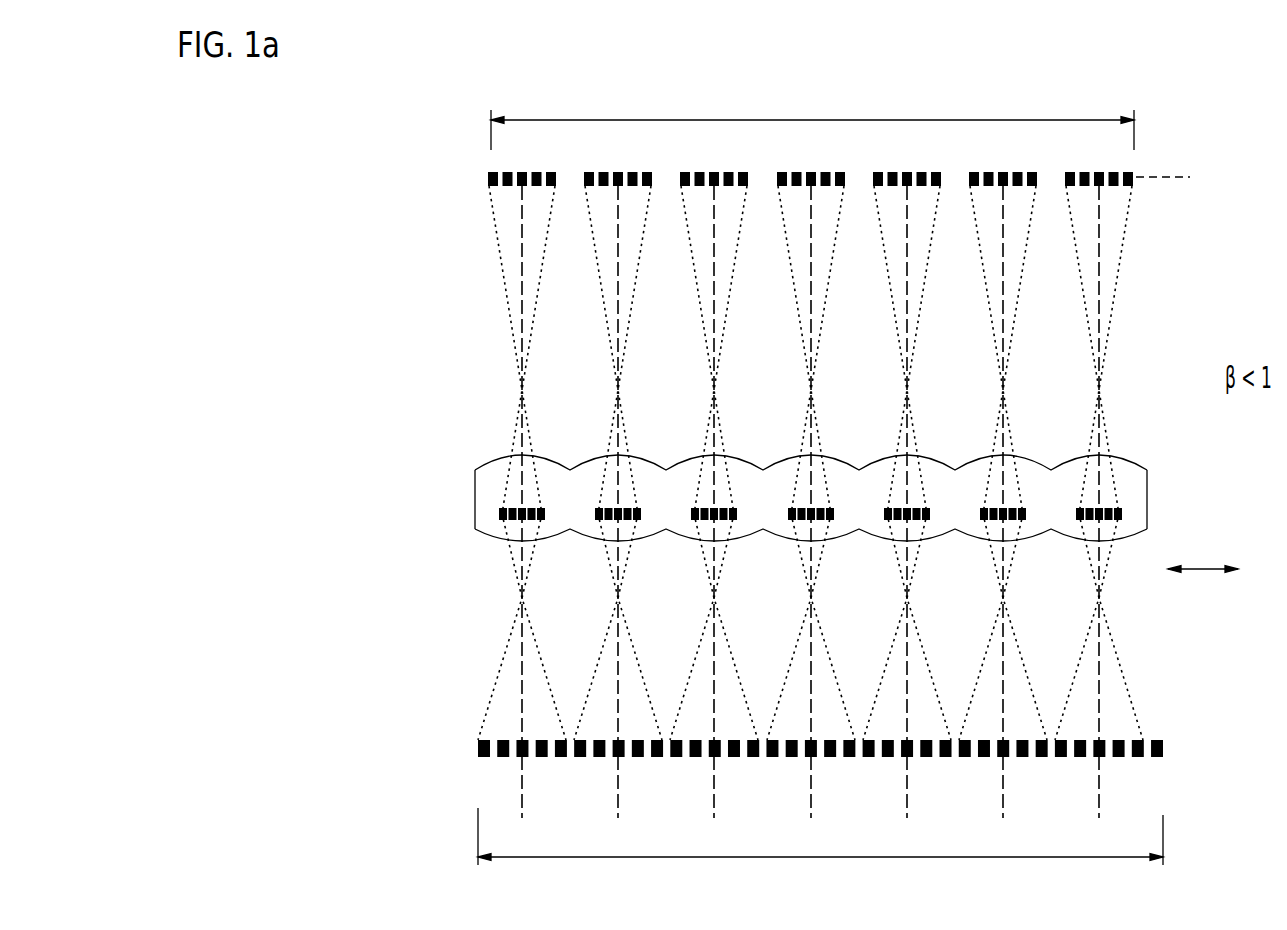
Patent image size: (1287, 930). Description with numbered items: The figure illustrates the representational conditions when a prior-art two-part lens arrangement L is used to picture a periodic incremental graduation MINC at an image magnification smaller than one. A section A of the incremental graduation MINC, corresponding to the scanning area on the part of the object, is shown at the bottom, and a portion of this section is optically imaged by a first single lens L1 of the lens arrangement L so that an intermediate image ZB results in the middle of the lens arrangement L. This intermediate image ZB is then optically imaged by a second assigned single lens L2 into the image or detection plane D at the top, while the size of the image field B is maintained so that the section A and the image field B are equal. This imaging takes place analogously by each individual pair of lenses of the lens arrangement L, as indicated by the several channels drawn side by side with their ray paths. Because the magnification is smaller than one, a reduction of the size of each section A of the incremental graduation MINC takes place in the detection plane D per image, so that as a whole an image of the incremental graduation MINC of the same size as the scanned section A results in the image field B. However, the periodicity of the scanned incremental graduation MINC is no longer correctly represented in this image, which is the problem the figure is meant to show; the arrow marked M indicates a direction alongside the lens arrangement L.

The detection plane D is at (488, 177).
The image field B is at (817, 120).
The lens arrangement L is at (751, 480).
The second single lens L2 is at (486, 463).
The intermediate image ZB is at (504, 512).
The first single lens L1 is at (480, 539).
The incremental graduation MINC is at (456, 745).
The section A is at (800, 859).
The movement direction M is at (1203, 546).